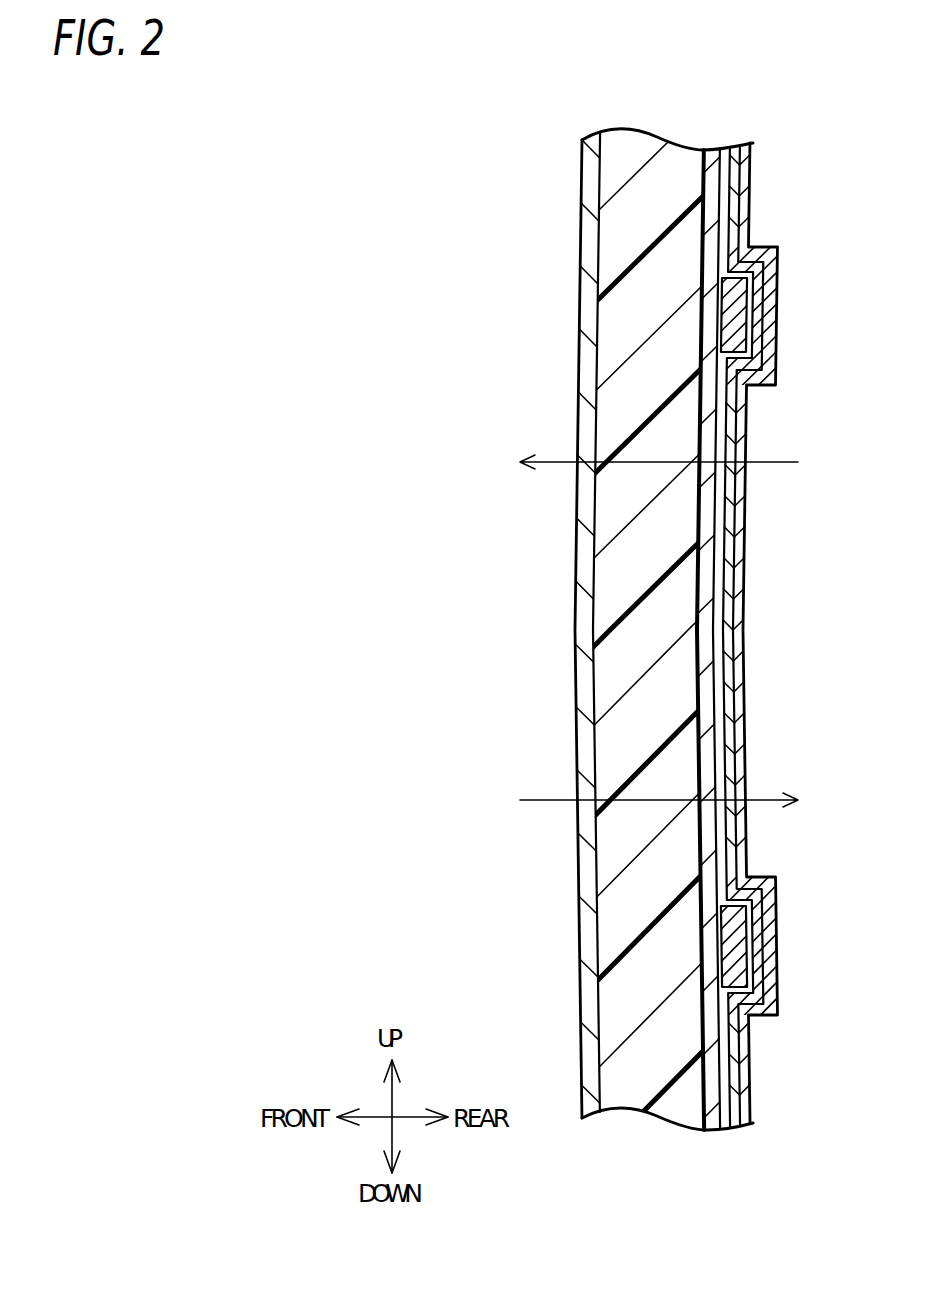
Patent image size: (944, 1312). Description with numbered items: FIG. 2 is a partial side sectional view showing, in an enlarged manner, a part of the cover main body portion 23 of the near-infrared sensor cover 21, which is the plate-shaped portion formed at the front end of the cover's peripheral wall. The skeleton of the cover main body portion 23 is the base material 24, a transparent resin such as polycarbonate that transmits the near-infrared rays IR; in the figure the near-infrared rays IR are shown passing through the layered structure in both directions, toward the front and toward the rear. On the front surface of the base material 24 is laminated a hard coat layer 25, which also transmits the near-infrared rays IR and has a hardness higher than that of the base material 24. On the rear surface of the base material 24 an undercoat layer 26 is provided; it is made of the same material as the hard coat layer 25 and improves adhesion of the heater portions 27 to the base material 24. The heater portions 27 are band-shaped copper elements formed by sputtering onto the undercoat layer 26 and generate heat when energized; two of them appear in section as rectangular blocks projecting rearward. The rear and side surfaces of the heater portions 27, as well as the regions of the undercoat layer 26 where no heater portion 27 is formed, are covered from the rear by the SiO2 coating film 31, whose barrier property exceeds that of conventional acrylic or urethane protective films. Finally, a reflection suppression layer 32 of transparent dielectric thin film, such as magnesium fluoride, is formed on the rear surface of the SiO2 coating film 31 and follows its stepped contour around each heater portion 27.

The near-infrared sensor cover 21 is at (693, 616).
The cover main body portion 23 is at (447, 163).
The base material 24 is at (603, 605).
The hard coat layer 25 is at (580, 735).
The undercoat layer 26 is at (705, 568).
The heater portion 27 is at (750, 316).
The SiO2 coating film 31 is at (720, 627).
The reflection suppression layer 32 is at (745, 682).
The near-infrared rays IR is at (755, 463).